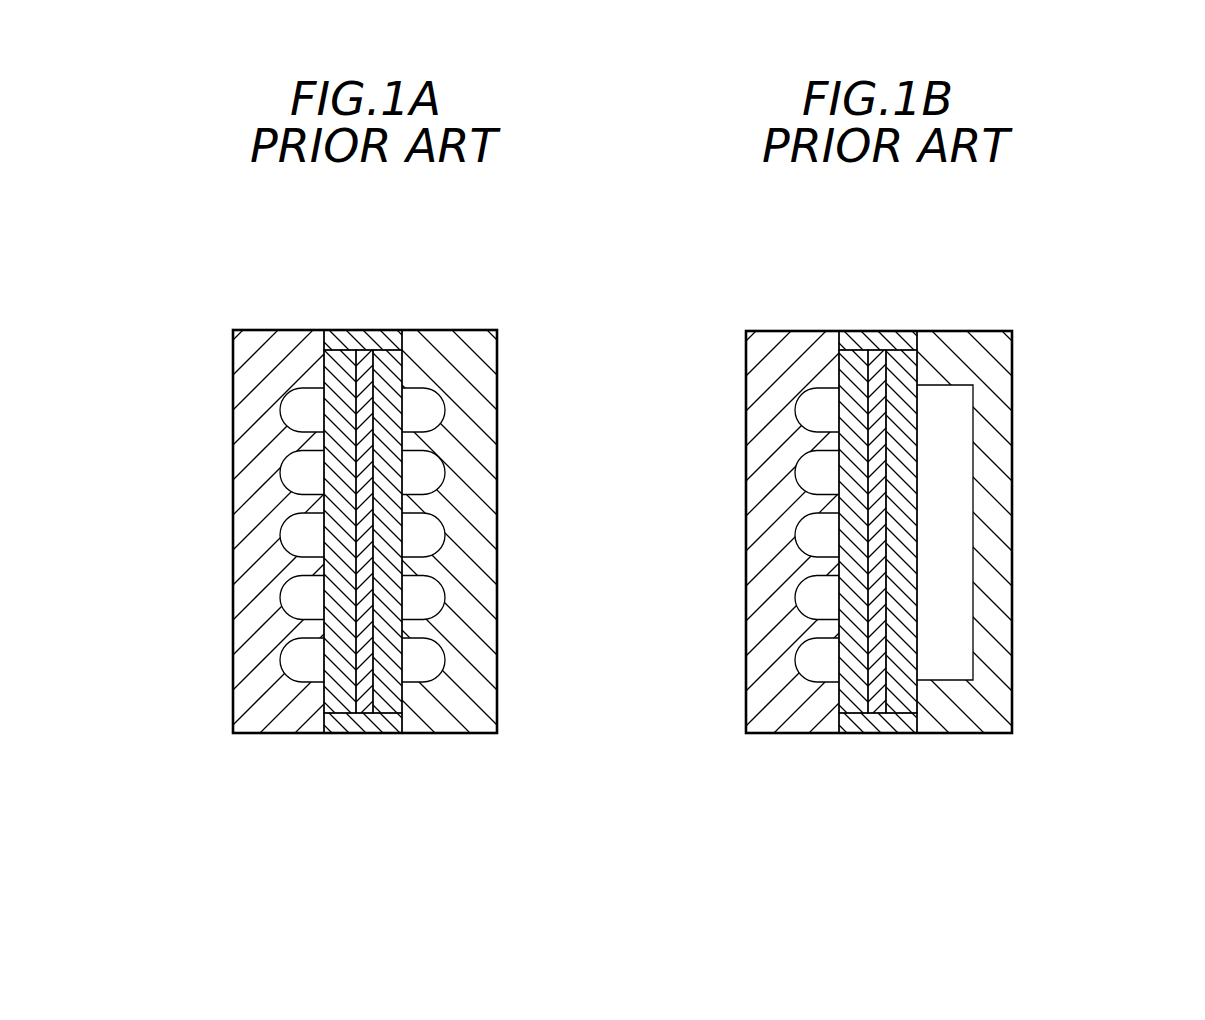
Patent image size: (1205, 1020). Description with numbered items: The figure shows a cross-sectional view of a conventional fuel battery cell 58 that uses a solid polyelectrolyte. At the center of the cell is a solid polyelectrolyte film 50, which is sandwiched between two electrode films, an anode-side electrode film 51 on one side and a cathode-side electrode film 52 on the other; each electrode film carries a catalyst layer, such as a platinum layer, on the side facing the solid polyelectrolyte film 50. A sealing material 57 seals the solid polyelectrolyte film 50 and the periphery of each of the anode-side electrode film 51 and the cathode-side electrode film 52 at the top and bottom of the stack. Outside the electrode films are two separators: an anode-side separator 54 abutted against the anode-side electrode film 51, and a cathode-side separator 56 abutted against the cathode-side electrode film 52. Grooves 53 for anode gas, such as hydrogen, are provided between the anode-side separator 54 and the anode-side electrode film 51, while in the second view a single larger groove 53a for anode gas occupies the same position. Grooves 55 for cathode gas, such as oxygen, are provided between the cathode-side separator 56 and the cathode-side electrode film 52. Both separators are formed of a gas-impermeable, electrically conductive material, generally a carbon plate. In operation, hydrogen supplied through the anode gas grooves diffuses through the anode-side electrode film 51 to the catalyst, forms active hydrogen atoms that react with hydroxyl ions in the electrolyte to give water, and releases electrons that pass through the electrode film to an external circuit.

In FIG. 1A, the solid polyelectrolyte film 50 is at (362, 697).
In FIG. 1B, the solid polyelectrolyte film 50 is at (887, 415).
In FIG. 1A, the anode-side electrode film 51 is at (386, 372).
In FIG. 1B, the anode-side electrode film 51 is at (912, 625).
In FIG. 1A, the cathode-side electrode film 52 is at (330, 463).
In FIG. 1B, the cathode-side electrode film 52 is at (840, 467).
In FIG. 1A, the grooves for anode gas 53 is at (433, 528).
In FIG. 1B, the groove for anode gas 53a is at (962, 515).
In FIG. 1A, the anode-side separator 54 is at (497, 603).
In FIG. 1A, the grooves for cathode gas 55 is at (298, 672).
In FIG. 1B, the grooves for cathode gas 55 is at (817, 670).
In FIG. 1A, the cathode-side separator 56 is at (237, 558).
In FIG. 1B, the cathode-side separator 56 is at (746, 370).
In FIG. 1A, the sealing material 57 is at (342, 330).
In FIG. 1B, the sealing material 57 is at (876, 331).
In FIG. 1A, the fuel battery cell 58 is at (440, 742).
In FIG. 1B, the fuel battery cell 58 is at (967, 742).